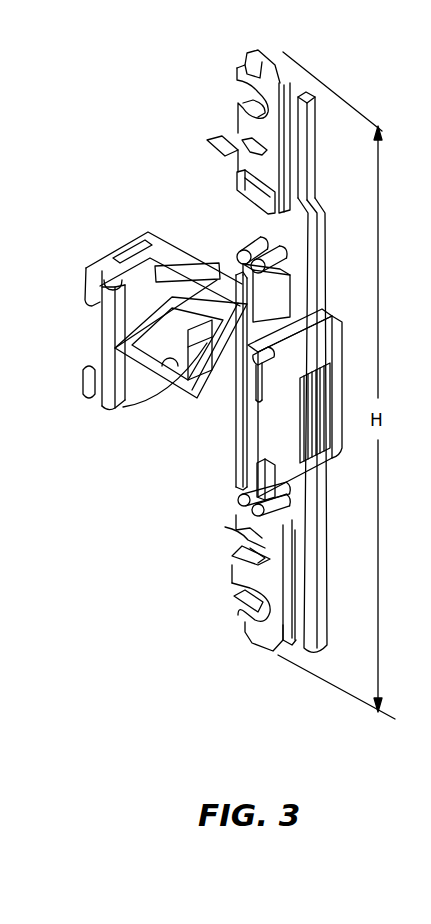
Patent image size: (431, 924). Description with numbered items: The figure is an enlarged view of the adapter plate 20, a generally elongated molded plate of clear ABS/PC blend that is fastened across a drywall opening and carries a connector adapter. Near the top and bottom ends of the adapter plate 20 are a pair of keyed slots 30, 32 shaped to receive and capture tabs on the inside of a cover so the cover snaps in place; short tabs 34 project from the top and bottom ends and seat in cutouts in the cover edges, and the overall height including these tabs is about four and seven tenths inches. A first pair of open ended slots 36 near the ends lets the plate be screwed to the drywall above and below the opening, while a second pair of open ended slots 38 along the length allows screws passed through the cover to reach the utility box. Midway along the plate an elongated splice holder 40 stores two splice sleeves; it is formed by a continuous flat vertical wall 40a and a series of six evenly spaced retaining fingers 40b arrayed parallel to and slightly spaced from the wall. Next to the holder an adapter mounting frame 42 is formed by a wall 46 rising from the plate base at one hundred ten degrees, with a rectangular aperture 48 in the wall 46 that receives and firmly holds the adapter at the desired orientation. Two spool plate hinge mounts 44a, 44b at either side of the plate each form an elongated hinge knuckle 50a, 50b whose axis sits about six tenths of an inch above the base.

The adapter plate 20 is at (326, 216).
The keyed slot 30 is at (240, 185).
The keyed slot 32 is at (240, 532).
The short tab 34 is at (264, 50).
The open ended slot 36 is at (240, 86).
The open ended slot 38 is at (240, 133).
The splice holder 40 is at (288, 268).
The flat vertical wall 40a is at (298, 293).
The retaining finger 40b is at (205, 243).
The adapter mounting frame 42 is at (205, 382).
The spool plate hinge mount 44a is at (100, 262).
The spool plate hinge mount 44b is at (296, 470).
The wall 46 is at (178, 300).
The rectangular aperture 48 is at (165, 378).
The hinge knuckle 50a is at (98, 322).
The hinge knuckle 50b is at (250, 420).